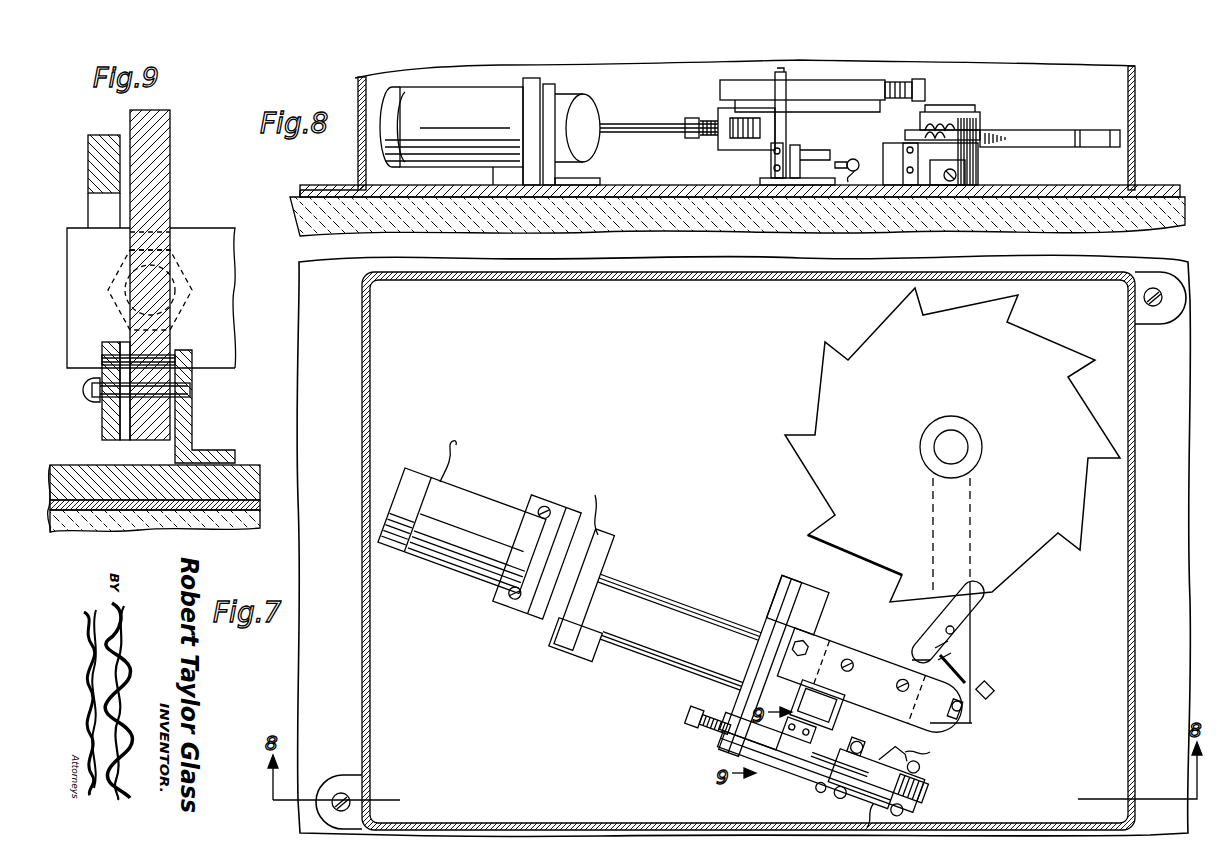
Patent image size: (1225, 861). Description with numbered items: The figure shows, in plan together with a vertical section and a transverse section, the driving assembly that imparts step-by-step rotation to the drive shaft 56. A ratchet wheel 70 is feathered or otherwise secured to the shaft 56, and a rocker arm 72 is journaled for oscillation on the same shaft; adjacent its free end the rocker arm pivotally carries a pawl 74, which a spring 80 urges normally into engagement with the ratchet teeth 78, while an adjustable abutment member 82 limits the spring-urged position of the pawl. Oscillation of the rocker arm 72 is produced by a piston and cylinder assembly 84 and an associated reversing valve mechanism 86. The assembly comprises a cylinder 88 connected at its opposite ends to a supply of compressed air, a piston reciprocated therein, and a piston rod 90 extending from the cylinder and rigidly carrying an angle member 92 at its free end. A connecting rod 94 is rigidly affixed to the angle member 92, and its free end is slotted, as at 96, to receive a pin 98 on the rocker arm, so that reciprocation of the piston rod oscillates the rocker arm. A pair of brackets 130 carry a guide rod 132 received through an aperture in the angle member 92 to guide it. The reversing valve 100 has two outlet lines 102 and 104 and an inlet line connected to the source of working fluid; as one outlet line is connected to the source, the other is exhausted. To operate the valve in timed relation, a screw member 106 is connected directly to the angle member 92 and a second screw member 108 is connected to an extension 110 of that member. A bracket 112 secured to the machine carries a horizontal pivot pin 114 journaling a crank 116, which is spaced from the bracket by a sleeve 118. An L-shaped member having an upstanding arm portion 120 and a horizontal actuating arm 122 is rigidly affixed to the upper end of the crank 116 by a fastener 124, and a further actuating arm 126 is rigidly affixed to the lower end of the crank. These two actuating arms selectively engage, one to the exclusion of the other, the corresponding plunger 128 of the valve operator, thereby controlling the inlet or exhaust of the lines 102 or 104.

In FIG. 7, the drive shaft 56 is at (968, 457).
In FIG. 8, the drive shaft 56 is at (947, 112).
In FIG. 7, the ratchet wheel 70 is at (1010, 548).
In FIG. 8, the ratchet wheel 70 is at (1027, 130).
In FIG. 7, the rocker arm 72 is at (968, 648).
In FIG. 7, the pawl 74 is at (975, 612).
In FIG. 7, the ratchet teeth 78 is at (900, 578).
In FIG. 7, the spring 80 is at (965, 665).
In FIG. 8, the spring 80 is at (952, 120).
In FIG. 7, the abutment member 82 is at (980, 680).
In FIG. 8, the abutment member 82 is at (980, 132).
In FIG. 7, the piston and cylinder assembly 84 is at (628, 538).
In FIG. 8, the piston and cylinder assembly 84 is at (561, 131).
In FIG. 7, the reversing valve mechanism 86 is at (880, 760).
In FIG. 8, the reversing valve mechanism 86 is at (878, 142).
In FIG. 7, the cylinder 88 is at (485, 505).
In FIG. 8, the cylinder 88 is at (470, 125).
In FIG. 7, the piston rod 90 is at (662, 595).
In FIG. 7, the angle member 92 is at (822, 618).
In FIG. 8, the angle member 92 is at (740, 138).
In FIG. 7, the connecting rod 94 is at (863, 660).
In FIG. 8, the connecting rod 94 is at (980, 152).
In FIG. 7, the slot 96 is at (955, 631).
In FIG. 7, the pin 98 is at (965, 707).
In FIG. 7, the reversing valve 100 is at (850, 757).
In FIG. 7, the outlet line 102 is at (460, 447).
In FIG. 7, the outlet line 104 is at (603, 490).
In FIG. 8, the outlet line 104 is at (852, 170).
In FIG. 7, the screw member 106 is at (679, 722).
In FIG. 8, the screw member 106 is at (688, 118).
In FIG. 7, the screw member 108 is at (920, 800).
In FIG. 8, the screw member 108 is at (920, 92).
In FIG. 7, the extension 110 is at (800, 775).
In FIG. 8, the extension 110 is at (842, 88).
In FIG. 8, the bracket 112 is at (795, 185).
In FIG. 9, the bracket 112 is at (192, 420).
In FIG. 9, the horizontal pivot pin 114 is at (192, 385).
In FIG. 9, the crank 116 is at (100, 410).
In FIG. 9, the sleeve 118 is at (180, 355).
In FIG. 7, the upstanding arm portion 120 is at (762, 770).
In FIG. 8, the upstanding arm portion 120 is at (780, 115).
In FIG. 9, the upstanding arm portion 120 is at (172, 195).
In FIG. 7, the horizontal actuating arm 122 is at (805, 770).
In FIG. 8, the horizontal actuating arm 122 is at (800, 150).
In FIG. 9, the fastener 124 is at (168, 345).
In FIG. 8, the actuating arm 126 is at (810, 170).
In FIG. 9, the actuating arm 126 is at (150, 440).
In FIG. 7, the plunger 128 is at (832, 770).
In FIG. 8, the plunger 128 is at (825, 170).
In FIG. 7, the brackets 130 is at (838, 702).
In FIG. 8, the brackets 130 is at (600, 178).
In FIG. 7, the guide rod 132 is at (663, 655).
In FIG. 8, the guide rod 132 is at (630, 125).